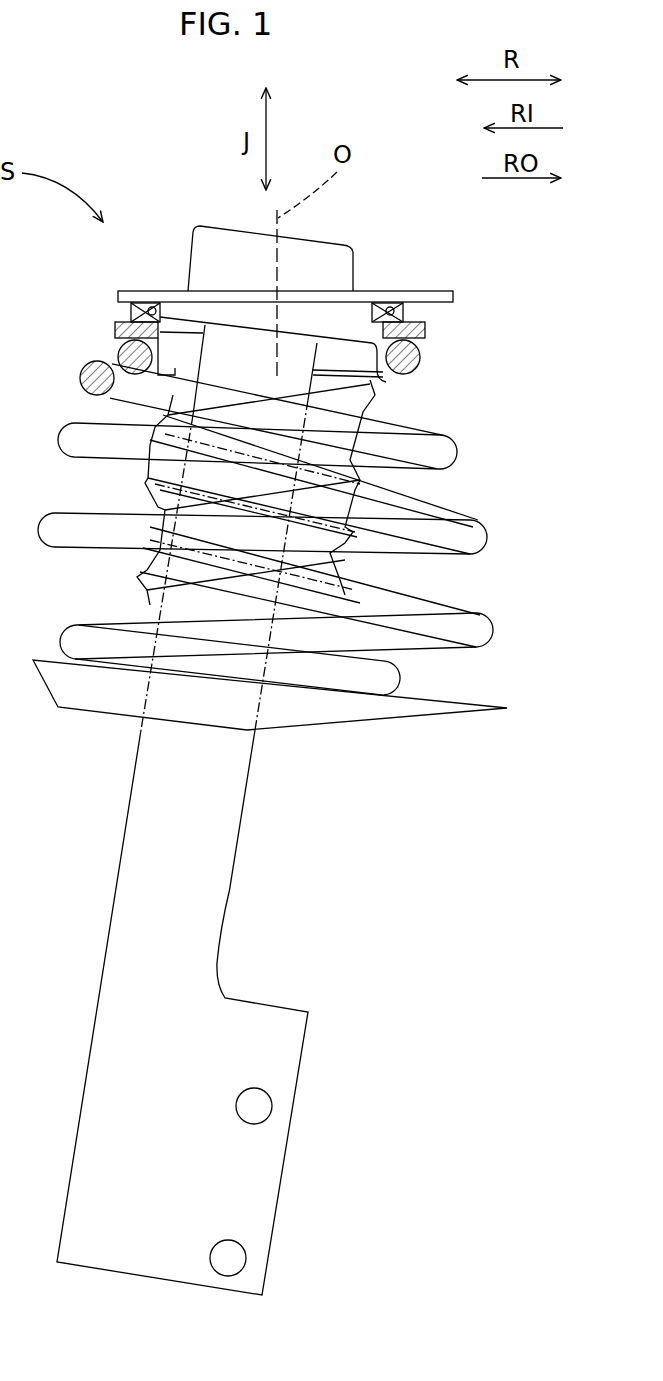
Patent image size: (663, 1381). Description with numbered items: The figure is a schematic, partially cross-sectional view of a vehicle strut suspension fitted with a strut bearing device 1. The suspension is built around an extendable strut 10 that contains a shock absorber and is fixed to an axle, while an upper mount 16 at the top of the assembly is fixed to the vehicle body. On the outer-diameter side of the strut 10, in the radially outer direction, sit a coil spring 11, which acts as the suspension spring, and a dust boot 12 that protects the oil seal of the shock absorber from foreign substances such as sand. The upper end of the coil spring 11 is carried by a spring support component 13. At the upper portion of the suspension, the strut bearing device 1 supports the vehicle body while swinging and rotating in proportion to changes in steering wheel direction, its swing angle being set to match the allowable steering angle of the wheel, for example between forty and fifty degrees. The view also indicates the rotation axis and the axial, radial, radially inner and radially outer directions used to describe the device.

The strut bearing device 1 is at (118, 312).
The strut 10 is at (238, 882).
The coil spring 11 is at (443, 455).
The dust boot 12 is at (335, 565).
The spring support component 13 is at (437, 330).
The upper mount 16 is at (433, 290).